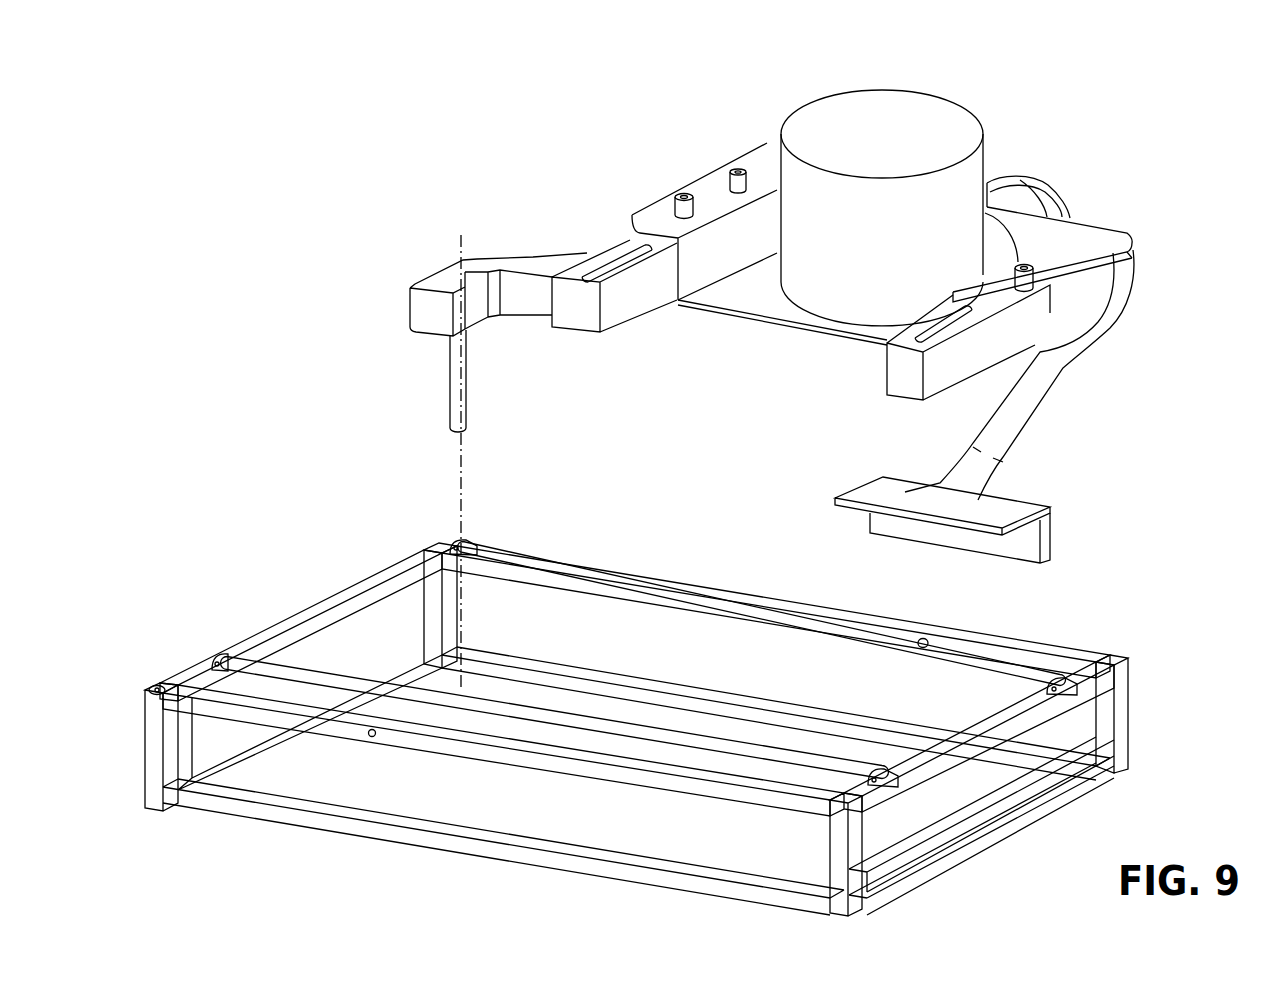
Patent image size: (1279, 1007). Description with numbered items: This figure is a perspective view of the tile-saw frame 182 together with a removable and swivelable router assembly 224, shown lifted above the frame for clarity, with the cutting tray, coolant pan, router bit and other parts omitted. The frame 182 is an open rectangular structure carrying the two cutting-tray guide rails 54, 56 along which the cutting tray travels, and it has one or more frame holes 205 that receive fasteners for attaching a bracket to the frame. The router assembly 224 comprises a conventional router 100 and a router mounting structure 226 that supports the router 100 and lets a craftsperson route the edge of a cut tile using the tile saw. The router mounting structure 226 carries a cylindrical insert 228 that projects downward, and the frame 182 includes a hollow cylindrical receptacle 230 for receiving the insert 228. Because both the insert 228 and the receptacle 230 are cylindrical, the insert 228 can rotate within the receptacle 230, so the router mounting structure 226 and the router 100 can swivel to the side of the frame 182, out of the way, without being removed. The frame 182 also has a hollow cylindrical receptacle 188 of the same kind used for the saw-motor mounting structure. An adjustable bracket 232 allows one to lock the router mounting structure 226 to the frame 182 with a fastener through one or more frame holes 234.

The cutting-tray guide rail 54 is at (333, 670).
The cutting-tray guide rail 56 is at (705, 606).
The router 100 is at (932, 93).
The frame 182 is at (1070, 636).
The hollow cylindrical receptacle 188 is at (160, 688).
The frame hole 205 is at (372, 735).
The router assembly 224 is at (345, 294).
The router mounting structure 226 is at (1085, 216).
The cylindrical insert 228 is at (468, 362).
The hollow cylindrical receptacle 230 is at (465, 545).
The adjustable bracket 232 is at (1073, 538).
The frame hole 234 is at (928, 642).